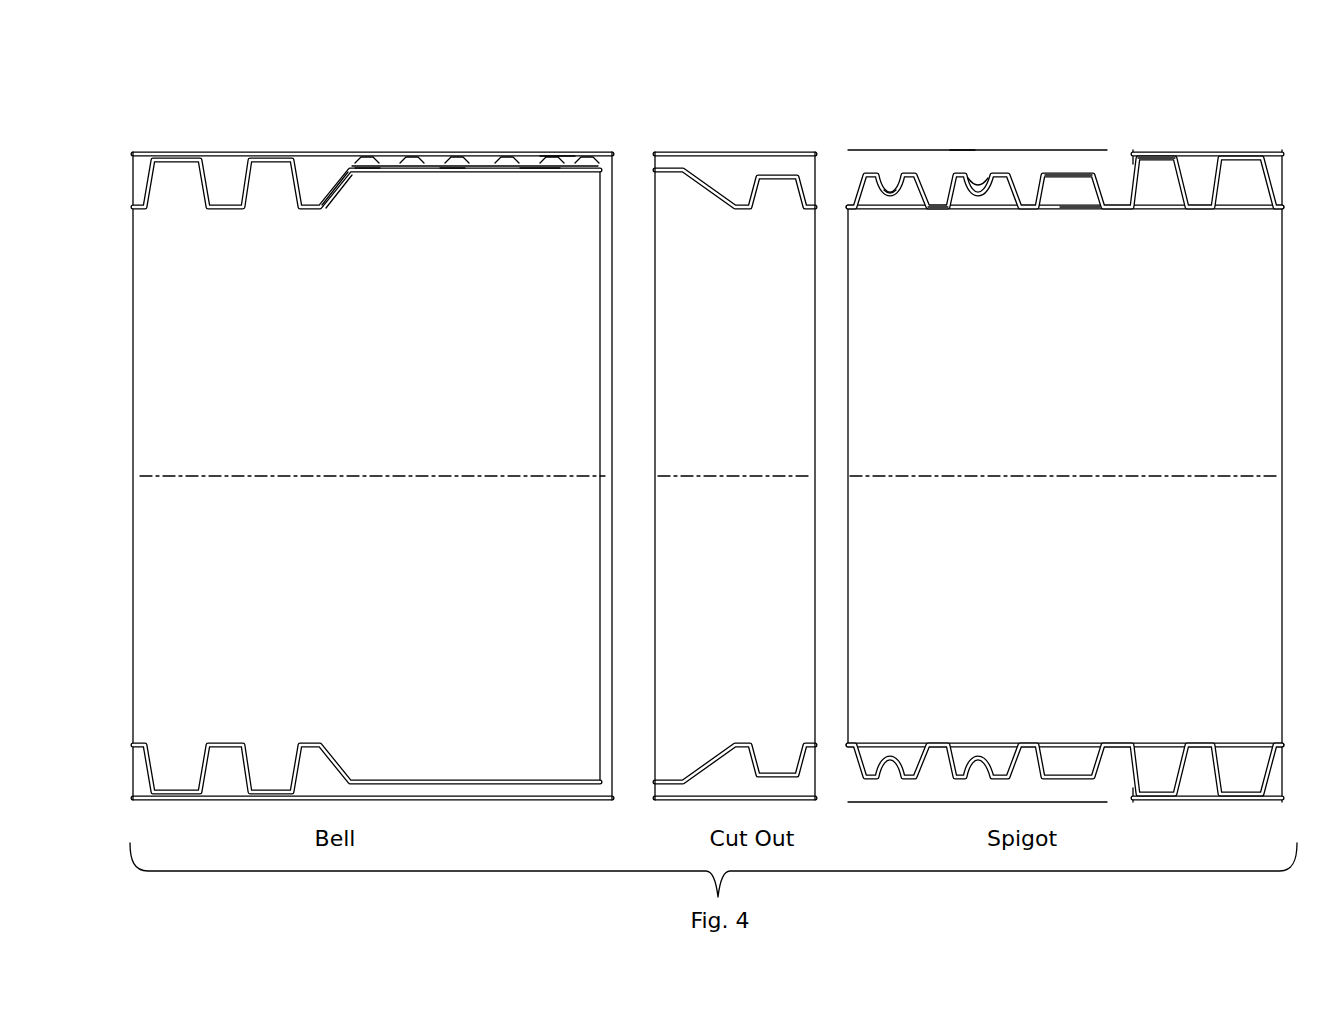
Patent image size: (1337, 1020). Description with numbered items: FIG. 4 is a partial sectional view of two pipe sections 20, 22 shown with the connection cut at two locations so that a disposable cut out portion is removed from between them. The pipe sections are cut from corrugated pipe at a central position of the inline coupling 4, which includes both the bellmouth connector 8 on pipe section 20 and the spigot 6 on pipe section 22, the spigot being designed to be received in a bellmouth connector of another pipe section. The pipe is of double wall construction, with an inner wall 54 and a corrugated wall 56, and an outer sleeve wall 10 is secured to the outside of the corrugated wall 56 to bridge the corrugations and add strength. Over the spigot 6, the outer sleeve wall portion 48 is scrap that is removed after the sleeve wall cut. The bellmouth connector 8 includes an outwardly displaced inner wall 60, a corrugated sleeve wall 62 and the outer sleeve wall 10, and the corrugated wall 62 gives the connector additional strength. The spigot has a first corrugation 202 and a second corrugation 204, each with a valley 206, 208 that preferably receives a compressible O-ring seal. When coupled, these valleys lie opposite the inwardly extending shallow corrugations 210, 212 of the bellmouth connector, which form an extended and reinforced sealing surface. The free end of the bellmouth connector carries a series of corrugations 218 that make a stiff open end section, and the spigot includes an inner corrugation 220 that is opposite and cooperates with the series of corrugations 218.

The coupling 4 is at (540, 148).
The spigot 6 is at (946, 168).
The bellmouth connector 8 is at (470, 188).
The outer sleeve wall 10 is at (250, 148).
The pipe section 20 is at (622, 190).
The pipe section 22 is at (838, 235).
The outer sleeve wall portion 48 is at (963, 150).
The inner wall 54 is at (172, 210).
The corrugated wall 56 is at (240, 182).
The outwardly displaced inner wall 60 is at (437, 175).
The corrugated sleeve wall 62 is at (400, 170).
The first corrugation 202 is at (916, 220).
The second corrugation 204 is at (1002, 200).
The valley 206 is at (895, 192).
The valley 208 is at (978, 192).
The shallow corrugation 210 is at (380, 158).
The shallow corrugation 212 is at (455, 158).
The series of corrugations 218 is at (548, 150).
The inner corrugation 220 is at (1062, 185).